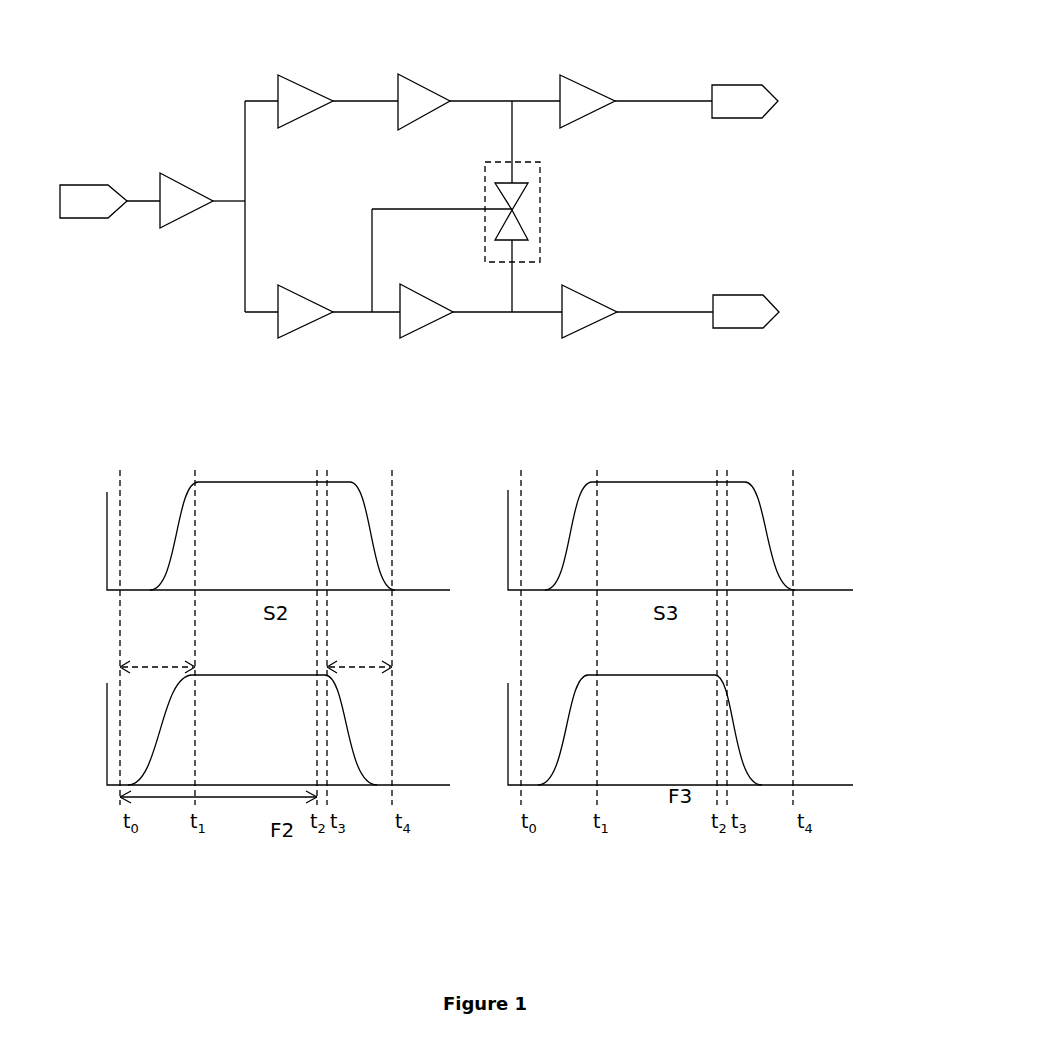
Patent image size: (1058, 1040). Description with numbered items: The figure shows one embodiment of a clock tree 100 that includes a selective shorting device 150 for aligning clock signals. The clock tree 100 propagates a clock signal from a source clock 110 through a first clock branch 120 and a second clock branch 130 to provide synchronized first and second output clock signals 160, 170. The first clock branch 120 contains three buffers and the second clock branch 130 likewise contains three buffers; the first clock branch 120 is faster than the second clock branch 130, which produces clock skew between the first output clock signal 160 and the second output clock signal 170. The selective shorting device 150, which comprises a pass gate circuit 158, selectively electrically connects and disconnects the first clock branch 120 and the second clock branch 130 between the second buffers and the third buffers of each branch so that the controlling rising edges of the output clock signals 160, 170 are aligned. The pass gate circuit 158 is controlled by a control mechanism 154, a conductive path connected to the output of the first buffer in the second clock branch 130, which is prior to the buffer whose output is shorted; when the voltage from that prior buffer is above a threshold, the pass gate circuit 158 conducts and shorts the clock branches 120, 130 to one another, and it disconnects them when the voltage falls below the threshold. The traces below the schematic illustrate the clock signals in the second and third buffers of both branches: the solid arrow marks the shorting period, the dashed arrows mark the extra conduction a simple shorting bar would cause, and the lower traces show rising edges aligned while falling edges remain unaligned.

The clock tree 100 is at (517, 50).
The source clock 110 is at (88, 218).
The first clock branch 120 is at (372, 61).
The second clock branch 130 is at (380, 328).
The selective shorting device 150 is at (485, 185).
The control mechanism 154 is at (400, 208).
The pass gate circuit 158 is at (520, 198).
The first output clock signal 160 is at (737, 118).
The second output clock signal 170 is at (737, 328).